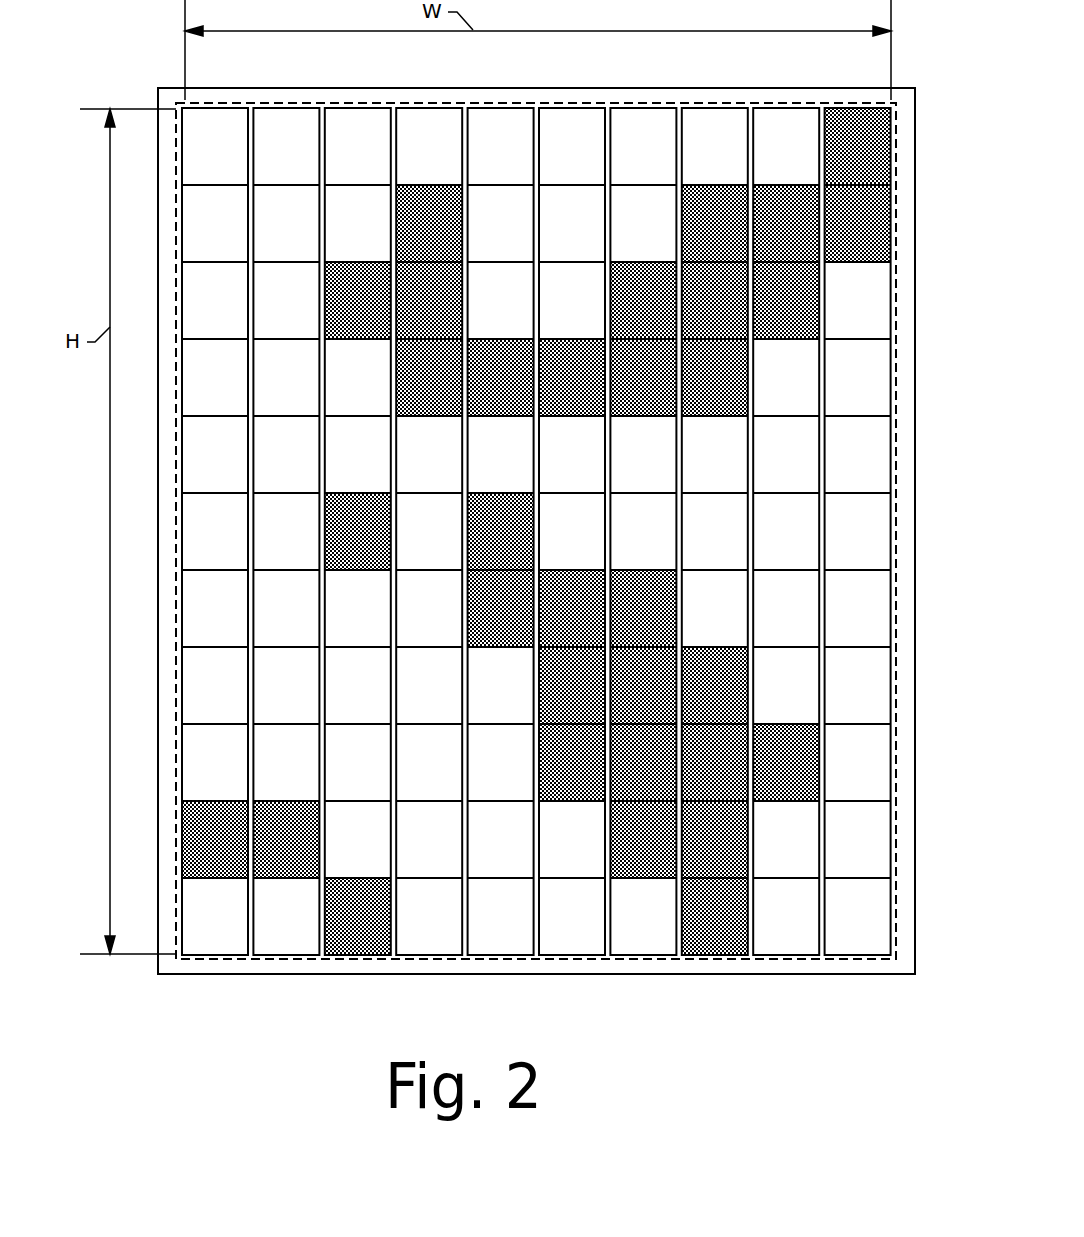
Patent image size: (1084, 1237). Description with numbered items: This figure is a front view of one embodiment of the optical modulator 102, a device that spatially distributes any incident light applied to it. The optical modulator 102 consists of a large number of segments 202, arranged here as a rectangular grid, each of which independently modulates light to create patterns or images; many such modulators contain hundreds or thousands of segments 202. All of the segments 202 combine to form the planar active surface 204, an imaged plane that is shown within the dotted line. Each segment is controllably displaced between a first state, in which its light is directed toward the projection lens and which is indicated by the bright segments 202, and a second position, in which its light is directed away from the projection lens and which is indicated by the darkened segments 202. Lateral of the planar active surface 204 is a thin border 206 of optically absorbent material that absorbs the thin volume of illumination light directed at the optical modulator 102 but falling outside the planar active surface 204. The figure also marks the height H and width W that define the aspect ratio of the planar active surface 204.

The optical modulator 102 is at (455, 975).
The segments 202 is at (645, 275).
The planar active surface 204 is at (868, 103).
The border 206 is at (630, 95).